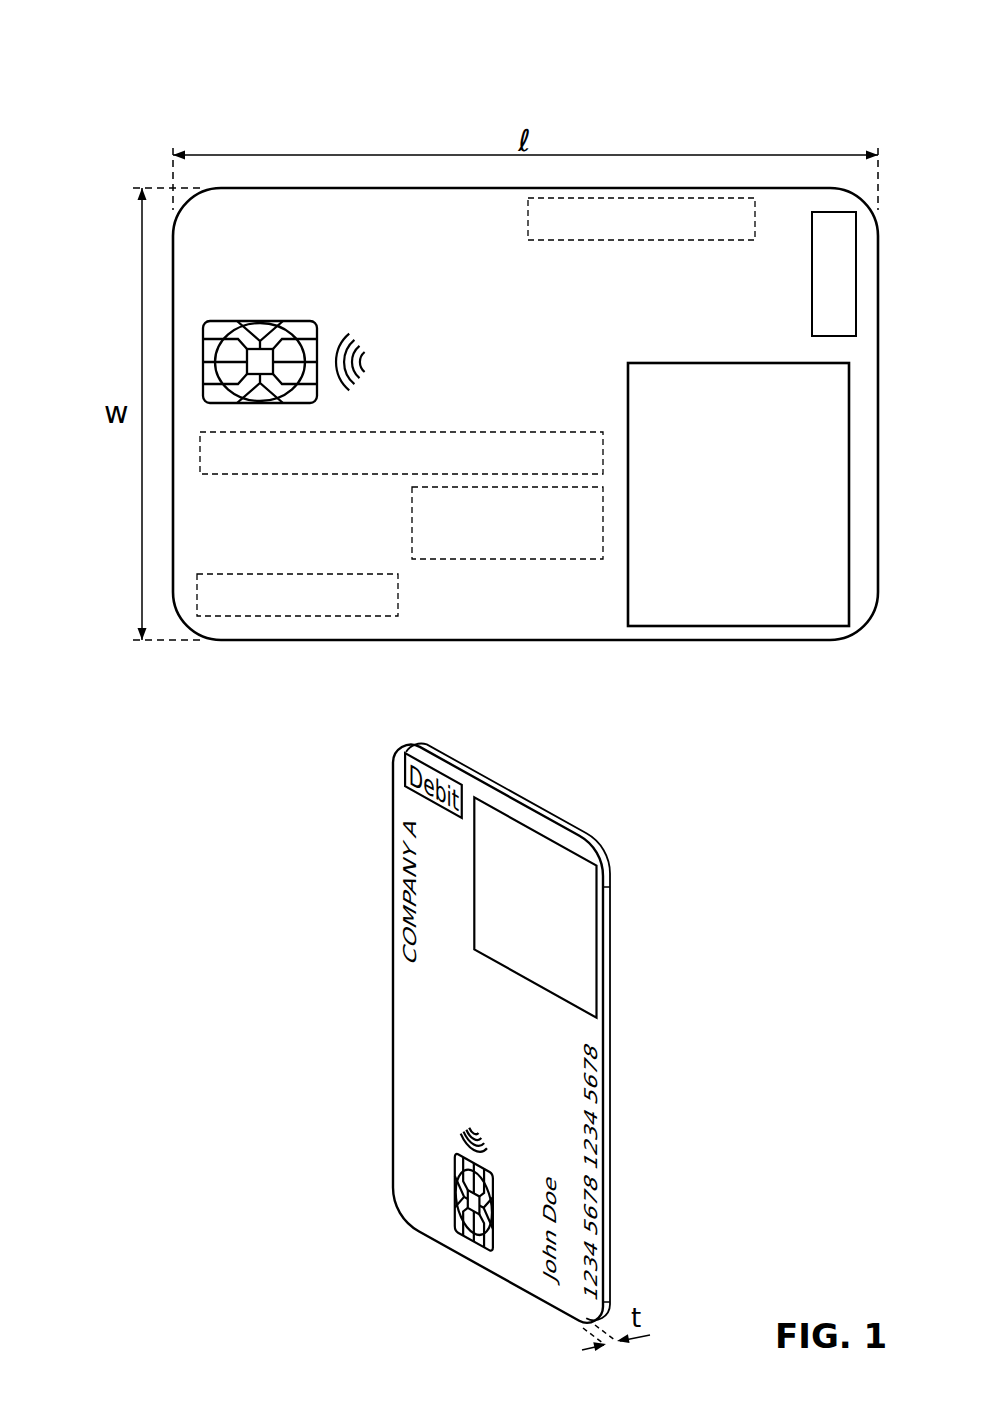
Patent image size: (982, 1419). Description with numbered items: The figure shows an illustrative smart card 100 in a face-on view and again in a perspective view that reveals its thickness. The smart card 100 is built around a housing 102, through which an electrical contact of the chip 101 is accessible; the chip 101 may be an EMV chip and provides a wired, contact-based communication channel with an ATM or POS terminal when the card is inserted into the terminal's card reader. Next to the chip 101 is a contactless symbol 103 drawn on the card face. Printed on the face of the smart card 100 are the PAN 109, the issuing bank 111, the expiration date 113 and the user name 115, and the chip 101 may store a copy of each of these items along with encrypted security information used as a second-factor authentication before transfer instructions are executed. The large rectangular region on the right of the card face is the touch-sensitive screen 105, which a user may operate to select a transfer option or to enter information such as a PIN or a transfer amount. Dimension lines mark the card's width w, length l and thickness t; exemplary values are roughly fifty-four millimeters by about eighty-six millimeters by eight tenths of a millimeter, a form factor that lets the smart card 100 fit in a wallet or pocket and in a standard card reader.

The smart card 100 is at (114, 36).
The chip 101 is at (302, 320).
The housing 102 is at (525, 643).
The contactless indicator 103 is at (368, 361).
The touch-sensitive screen 105 is at (727, 626).
The PAN 109 is at (492, 432).
The issuing bank 111 is at (528, 218).
The expiration date 113 is at (412, 522).
The user name 115 is at (293, 617).